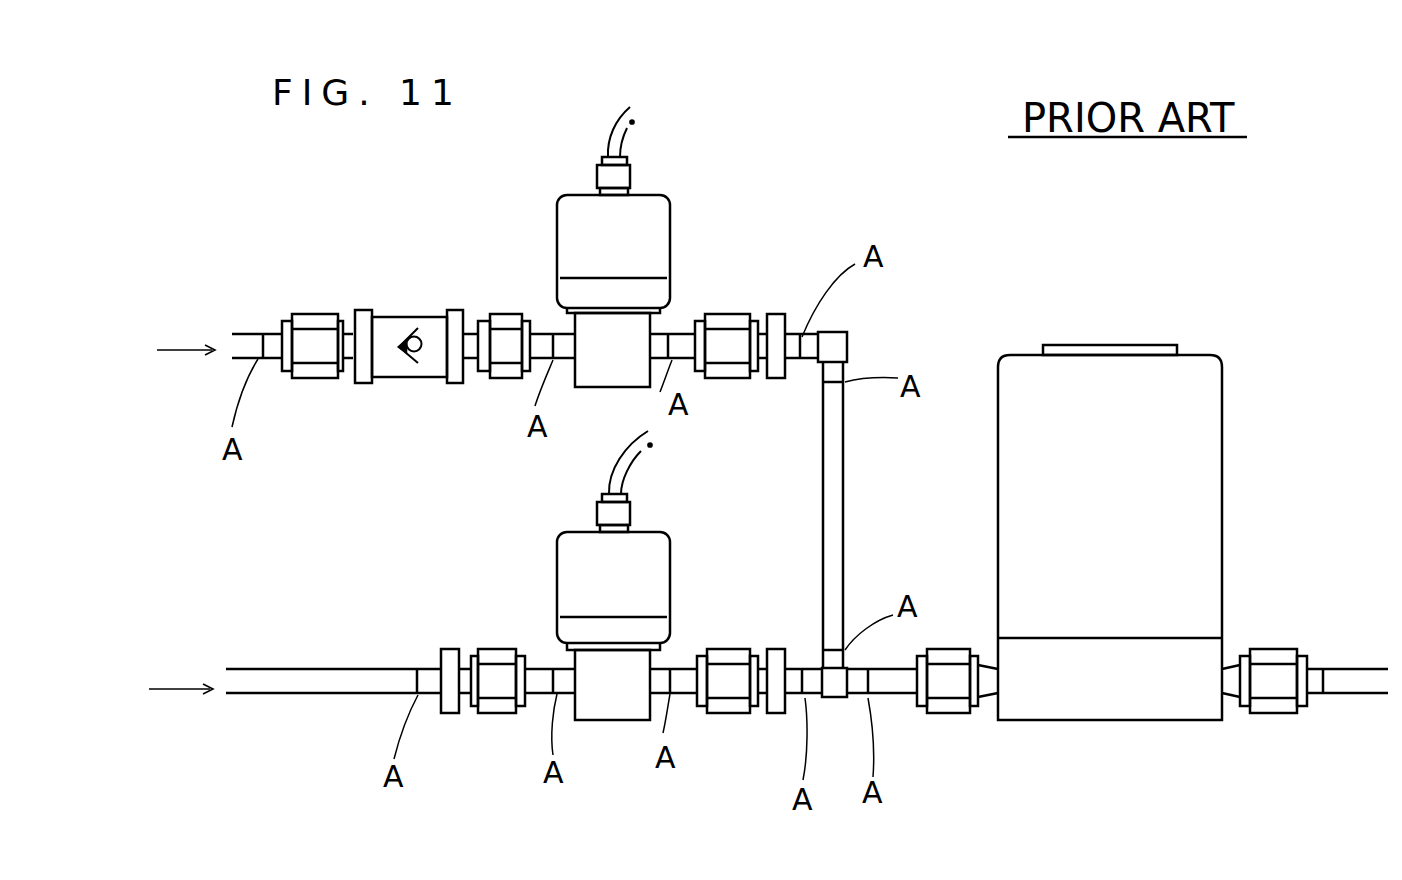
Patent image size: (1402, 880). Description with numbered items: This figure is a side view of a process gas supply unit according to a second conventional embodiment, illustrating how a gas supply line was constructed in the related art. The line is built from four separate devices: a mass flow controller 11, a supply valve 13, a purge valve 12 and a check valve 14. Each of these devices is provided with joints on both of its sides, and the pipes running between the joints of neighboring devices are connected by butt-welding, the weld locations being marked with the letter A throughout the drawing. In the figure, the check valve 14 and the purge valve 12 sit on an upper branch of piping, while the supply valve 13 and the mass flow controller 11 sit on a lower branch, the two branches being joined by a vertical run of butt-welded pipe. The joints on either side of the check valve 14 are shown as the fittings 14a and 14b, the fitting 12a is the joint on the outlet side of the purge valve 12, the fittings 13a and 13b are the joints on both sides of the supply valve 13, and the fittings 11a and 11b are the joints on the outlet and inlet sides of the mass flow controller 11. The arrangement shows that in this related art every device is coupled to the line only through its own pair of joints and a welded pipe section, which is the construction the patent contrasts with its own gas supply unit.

The mass flow controller 11 is at (1243, 342).
The tank outlet pipe joint 11a is at (1275, 661).
The tank inlet pipe joint 11b is at (948, 706).
The purge valve 12 is at (693, 172).
The first valve outlet pipe joint 12a is at (722, 323).
The supply valve 13 is at (696, 494).
The second valve outlet pipe joint 13a is at (732, 709).
The second valve inlet pipe joint 13b is at (494, 709).
The check valve 14 is at (414, 284).
The check valve outlet pipe joint 14a is at (503, 374).
The check valve inlet pipe joint 14b is at (318, 372).